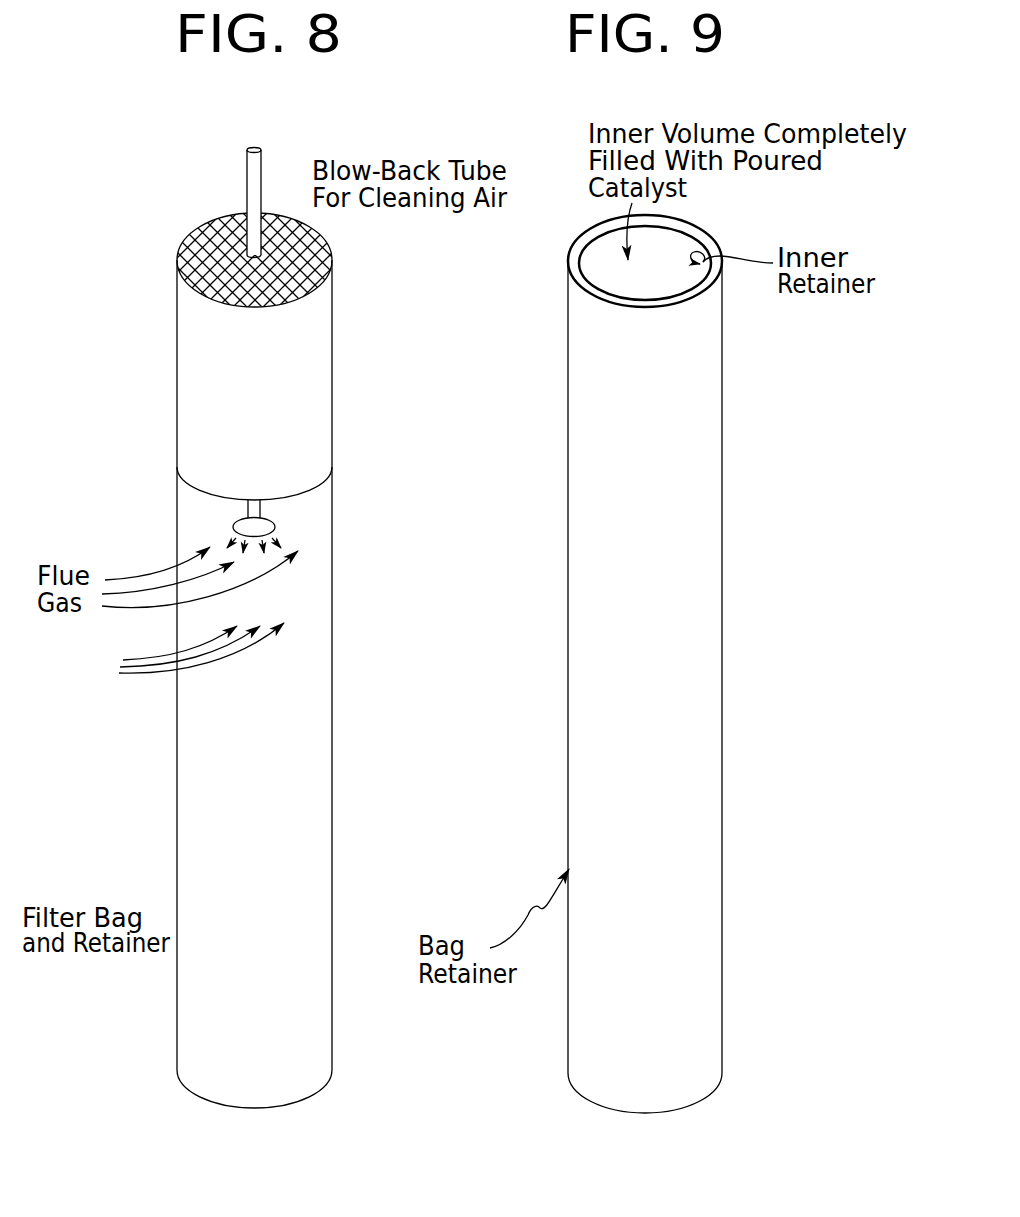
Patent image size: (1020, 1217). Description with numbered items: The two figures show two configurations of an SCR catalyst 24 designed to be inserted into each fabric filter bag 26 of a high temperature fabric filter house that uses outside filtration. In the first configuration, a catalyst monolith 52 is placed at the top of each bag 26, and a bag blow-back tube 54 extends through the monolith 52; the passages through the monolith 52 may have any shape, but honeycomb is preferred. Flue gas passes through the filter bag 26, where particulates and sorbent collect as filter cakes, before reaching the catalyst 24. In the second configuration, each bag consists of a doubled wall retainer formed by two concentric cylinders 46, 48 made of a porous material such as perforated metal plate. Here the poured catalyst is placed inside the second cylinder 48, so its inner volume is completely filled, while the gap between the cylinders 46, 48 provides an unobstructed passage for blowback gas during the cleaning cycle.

In FIG. 8, the SCR catalyst 24 is at (304, 121).
In FIG. 9, the SCR catalyst 24 is at (736, 402).
In FIG. 8, the fabric filter bag 26 is at (176, 847).
In FIG. 9, the first cylinder 46 is at (722, 600).
In FIG. 9, the second cylinder 48 is at (700, 233).
In FIG. 8, the catalyst monolith 52 is at (332, 322).
In FIG. 8, the bag blow-back tube 54 is at (264, 176).